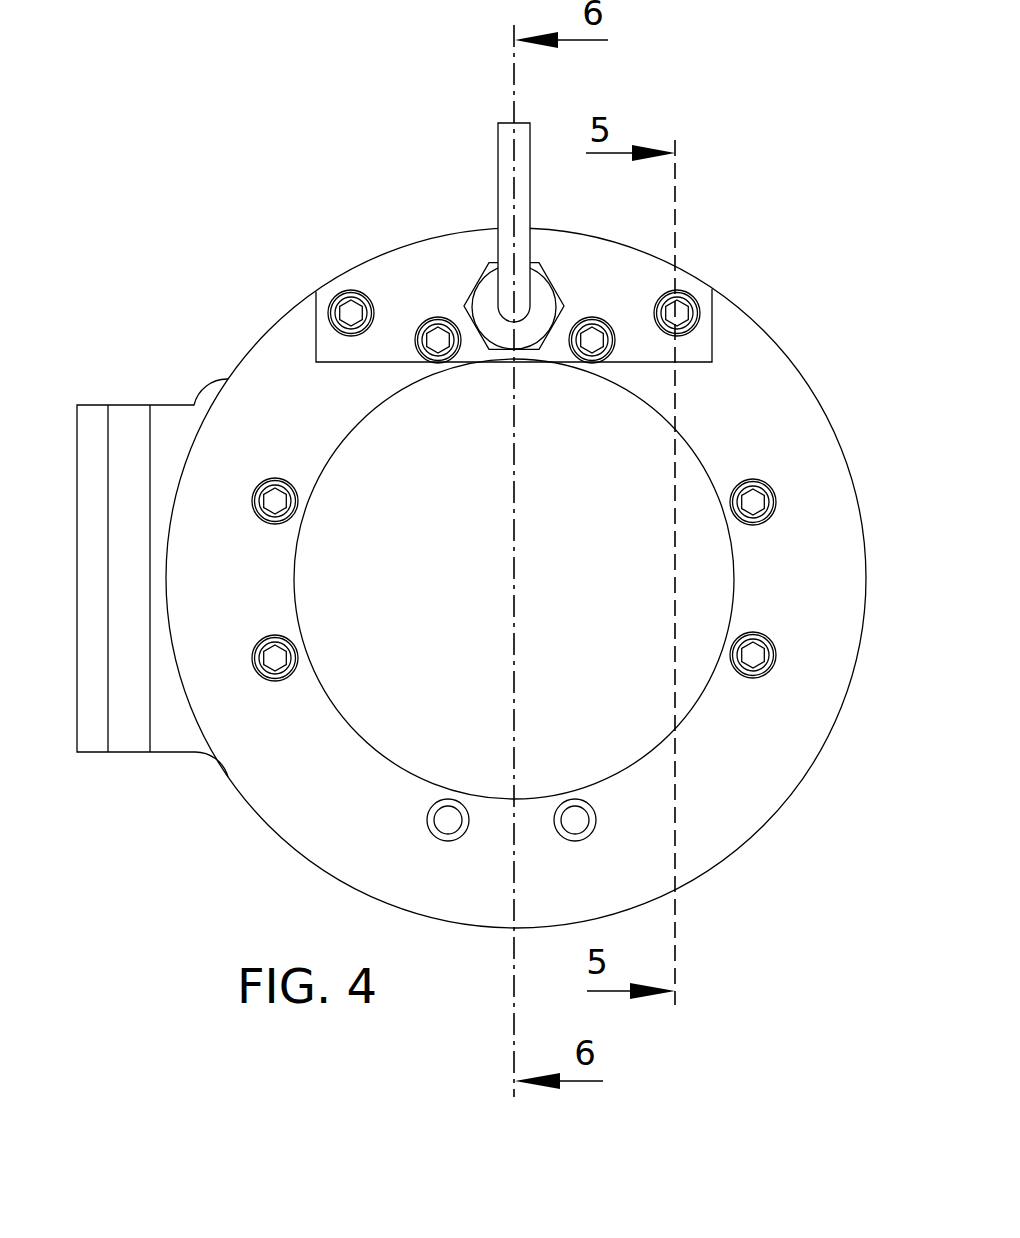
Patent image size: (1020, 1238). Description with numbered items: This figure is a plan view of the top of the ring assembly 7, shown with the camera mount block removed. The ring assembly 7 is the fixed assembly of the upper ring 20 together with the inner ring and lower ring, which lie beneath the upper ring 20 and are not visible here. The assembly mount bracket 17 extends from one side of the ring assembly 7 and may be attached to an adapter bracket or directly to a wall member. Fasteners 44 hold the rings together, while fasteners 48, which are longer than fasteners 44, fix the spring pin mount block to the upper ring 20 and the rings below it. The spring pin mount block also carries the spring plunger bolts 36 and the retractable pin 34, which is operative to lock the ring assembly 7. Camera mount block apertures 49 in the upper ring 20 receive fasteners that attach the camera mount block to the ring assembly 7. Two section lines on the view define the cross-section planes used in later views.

The ring assembly 7 is at (244, 320).
The assembly mount bracket 17 is at (85, 418).
The upper ring 20 is at (765, 388).
The retractable pin 34 is at (502, 173).
The spring plunger bolts 36 is at (343, 312).
The fasteners 44 is at (280, 503).
The fasteners 48 is at (438, 343).
The camera mount block apertures 49 is at (448, 818).